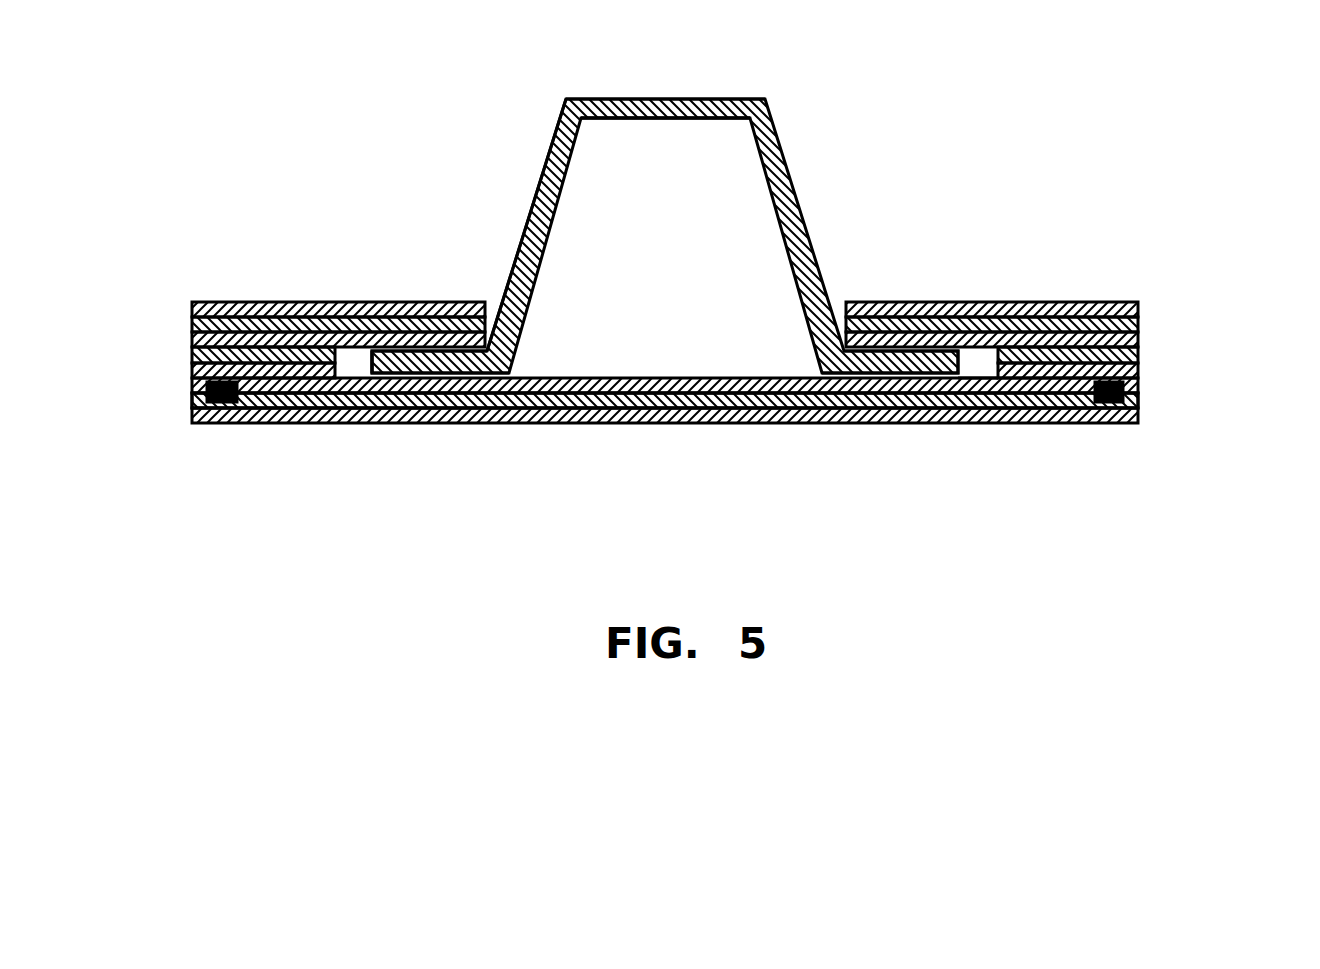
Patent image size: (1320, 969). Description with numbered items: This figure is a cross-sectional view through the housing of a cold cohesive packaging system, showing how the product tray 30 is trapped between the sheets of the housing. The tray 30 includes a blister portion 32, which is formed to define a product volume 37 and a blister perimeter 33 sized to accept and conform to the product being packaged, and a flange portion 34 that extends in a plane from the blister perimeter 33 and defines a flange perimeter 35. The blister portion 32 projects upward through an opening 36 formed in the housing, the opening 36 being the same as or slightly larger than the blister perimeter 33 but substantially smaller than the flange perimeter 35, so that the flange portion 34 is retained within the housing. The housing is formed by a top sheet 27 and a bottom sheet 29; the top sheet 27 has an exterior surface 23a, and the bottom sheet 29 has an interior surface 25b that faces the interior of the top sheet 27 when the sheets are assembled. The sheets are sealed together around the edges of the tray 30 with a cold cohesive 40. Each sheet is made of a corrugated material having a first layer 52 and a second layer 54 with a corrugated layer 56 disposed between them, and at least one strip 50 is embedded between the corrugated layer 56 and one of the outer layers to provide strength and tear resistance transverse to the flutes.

The exterior surface 23a is at (1050, 303).
The interior surface 25b is at (977, 378).
The top sheet 27 is at (1140, 330).
The bottom sheet 29 is at (1140, 398).
The product tray 30 is at (790, 173).
The blister portion 32 is at (772, 122).
The blister perimeter 33 is at (497, 315).
The flange portion 34 is at (433, 350).
The flange perimeter 35 is at (372, 355).
The opening 36 is at (835, 333).
The product volume 37 is at (698, 147).
The cold cohesive 40 is at (202, 372).
The strip 50 is at (223, 423).
The first layer 52 is at (202, 312).
The second layer 54 is at (202, 338).
The corrugated layer 56 is at (202, 328).